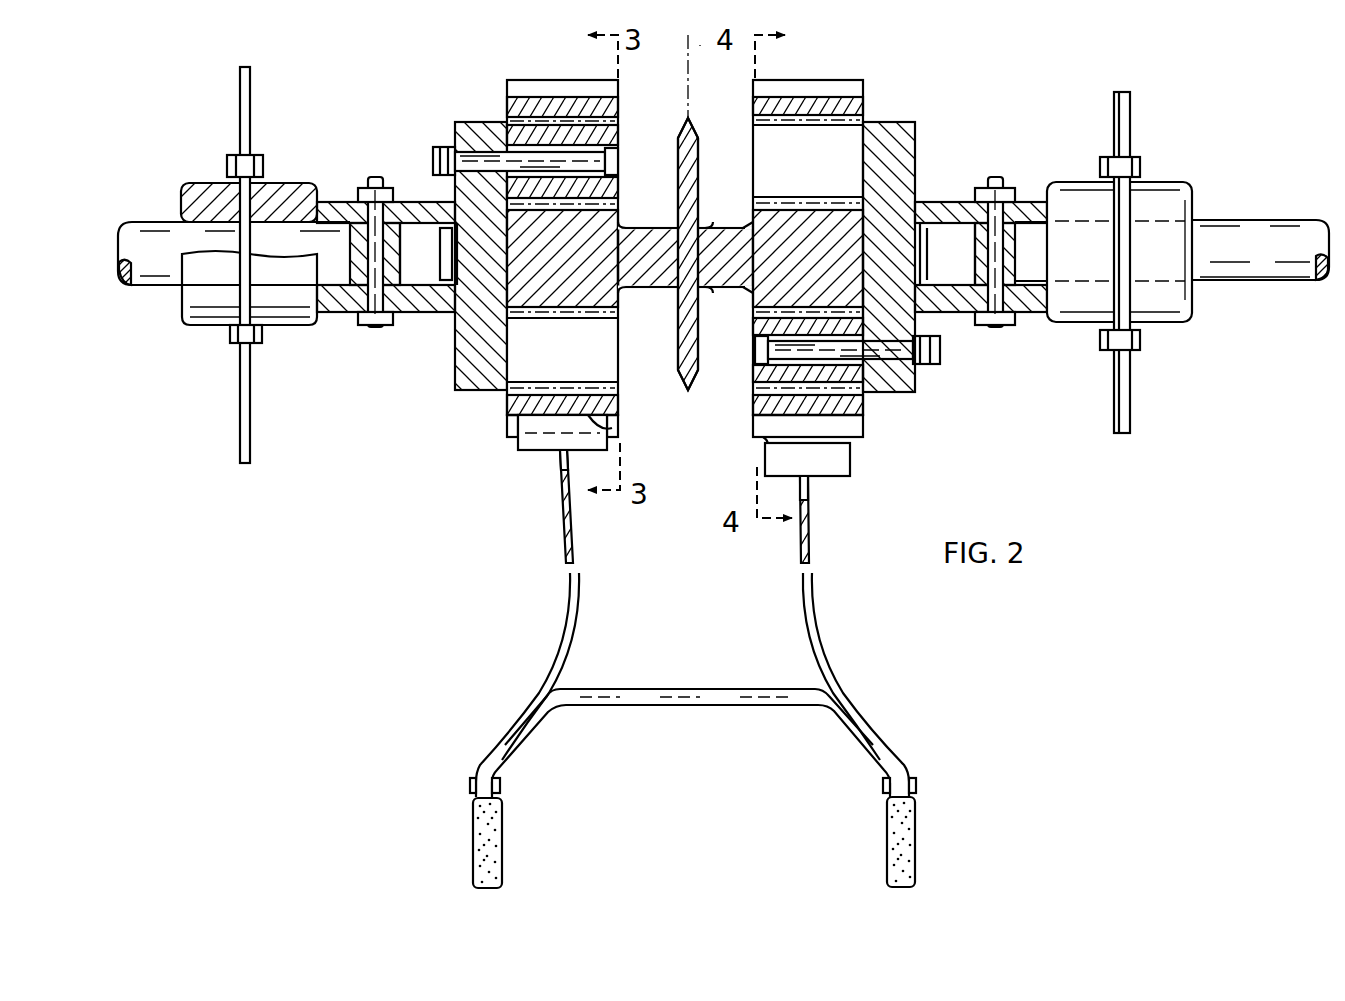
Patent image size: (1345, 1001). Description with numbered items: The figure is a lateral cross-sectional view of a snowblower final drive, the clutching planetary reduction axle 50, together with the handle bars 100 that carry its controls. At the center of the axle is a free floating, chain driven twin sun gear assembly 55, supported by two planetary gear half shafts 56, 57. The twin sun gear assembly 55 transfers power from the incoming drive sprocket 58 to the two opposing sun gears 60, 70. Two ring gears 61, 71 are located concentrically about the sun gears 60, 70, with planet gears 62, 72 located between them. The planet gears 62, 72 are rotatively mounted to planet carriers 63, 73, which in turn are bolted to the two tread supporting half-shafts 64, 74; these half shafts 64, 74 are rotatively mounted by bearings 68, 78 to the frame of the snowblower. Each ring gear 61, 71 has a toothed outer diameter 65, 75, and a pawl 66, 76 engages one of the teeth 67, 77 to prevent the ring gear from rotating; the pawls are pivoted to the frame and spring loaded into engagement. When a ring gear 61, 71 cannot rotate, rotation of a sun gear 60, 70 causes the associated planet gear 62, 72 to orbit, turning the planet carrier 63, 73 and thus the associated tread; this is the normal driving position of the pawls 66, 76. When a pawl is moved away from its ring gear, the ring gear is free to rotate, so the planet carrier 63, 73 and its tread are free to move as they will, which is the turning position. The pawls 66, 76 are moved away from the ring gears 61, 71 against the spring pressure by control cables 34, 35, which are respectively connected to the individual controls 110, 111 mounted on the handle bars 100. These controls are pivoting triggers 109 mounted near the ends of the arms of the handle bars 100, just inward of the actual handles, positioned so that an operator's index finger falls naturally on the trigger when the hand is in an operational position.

The control cable 34 is at (566, 565).
The control cable 35 is at (812, 541).
The clutching planetary reduction axle 50 is at (688, 508).
The twin sun gear assembly 55 is at (670, 323).
The planetary gear half shaft 56 is at (905, 122).
The planetary gear half shaft 57 is at (462, 124).
The incoming drive sprocket 58 is at (692, 140).
The sun gear 60 is at (831, 268).
The ring gear 61 is at (870, 410).
The planet gear 62 is at (760, 334).
The planet carrier 63 is at (917, 376).
The tread supporting half-shaft 64 is at (1227, 282).
The toothed outer diameter 65 is at (762, 447).
The pawl 66 is at (840, 475).
The tooth 67 is at (760, 426).
The bearing 68 is at (1093, 316).
The sun gear 70 is at (578, 264).
The ring gear 71 is at (505, 406).
The planet gear 72 is at (610, 133).
The planet carrier 73 is at (456, 371).
The tread supporting half-shaft 74 is at (170, 290).
The toothed outer diameter 75 is at (510, 430).
The pawl 76 is at (522, 450).
The tooth 77 is at (598, 421).
The bearing 78 is at (284, 310).
The handle bars 100 is at (502, 701).
The pivoting trigger 109 is at (504, 786).
The individual control 110 is at (920, 783).
The individual control 111 is at (468, 784).